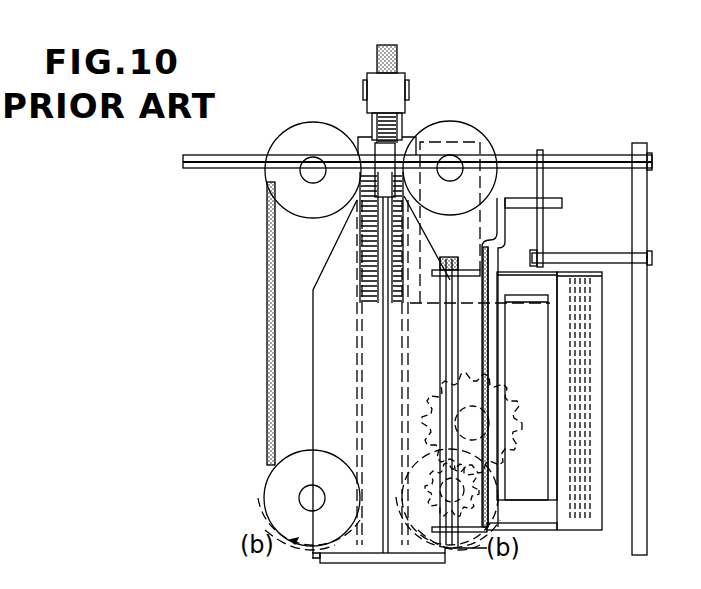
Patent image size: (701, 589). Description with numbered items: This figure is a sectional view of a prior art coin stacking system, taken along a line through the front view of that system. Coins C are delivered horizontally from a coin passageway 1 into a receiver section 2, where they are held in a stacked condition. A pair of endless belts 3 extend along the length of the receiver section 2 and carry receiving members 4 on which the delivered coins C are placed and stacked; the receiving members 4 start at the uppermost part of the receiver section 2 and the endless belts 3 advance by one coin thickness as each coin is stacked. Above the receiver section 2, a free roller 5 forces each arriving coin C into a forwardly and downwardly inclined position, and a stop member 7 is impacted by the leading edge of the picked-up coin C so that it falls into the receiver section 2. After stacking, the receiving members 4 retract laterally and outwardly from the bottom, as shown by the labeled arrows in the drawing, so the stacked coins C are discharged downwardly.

The coin passageway 1 is at (403, 61).
The receiver section 2 is at (372, 124).
The endless belts 3 is at (267, 232).
The receiving members 4 is at (267, 345).
The free roller 5 is at (393, 128).
The stop member 7 is at (358, 140).
The coins C is at (365, 270).